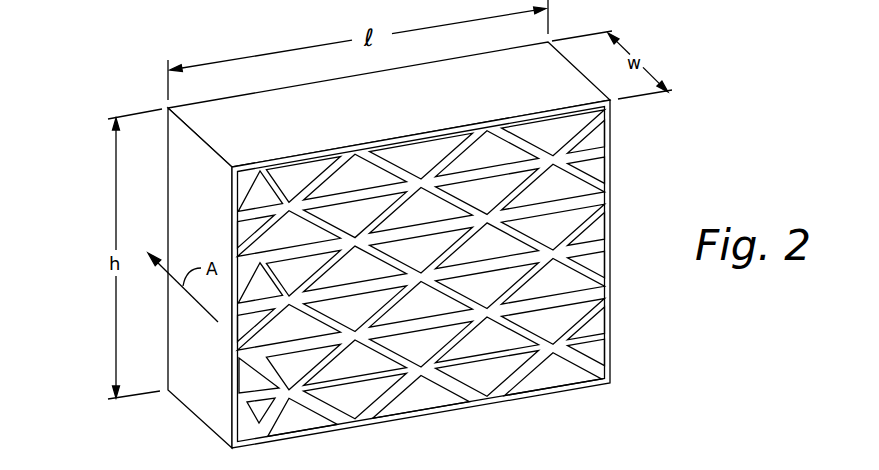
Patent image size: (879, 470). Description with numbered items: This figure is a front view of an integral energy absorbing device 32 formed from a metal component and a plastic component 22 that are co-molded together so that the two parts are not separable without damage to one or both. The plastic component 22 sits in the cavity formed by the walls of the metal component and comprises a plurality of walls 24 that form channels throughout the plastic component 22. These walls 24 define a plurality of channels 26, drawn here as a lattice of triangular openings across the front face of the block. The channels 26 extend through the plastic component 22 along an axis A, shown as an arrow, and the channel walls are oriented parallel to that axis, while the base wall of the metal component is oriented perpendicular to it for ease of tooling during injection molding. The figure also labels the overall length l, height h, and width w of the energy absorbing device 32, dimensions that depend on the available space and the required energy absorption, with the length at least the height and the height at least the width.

The plastic component 22 is at (428, 245).
The walls 24 is at (459, 278).
The channels 26 is at (586, 326).
The integral energy absorbing device 32 is at (116, 78).